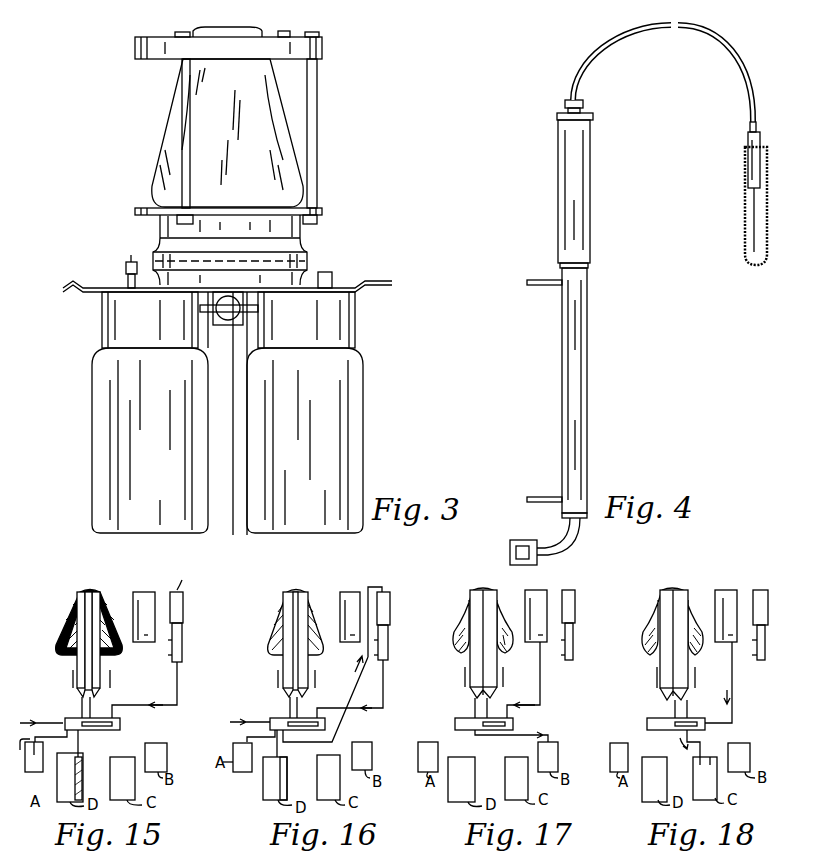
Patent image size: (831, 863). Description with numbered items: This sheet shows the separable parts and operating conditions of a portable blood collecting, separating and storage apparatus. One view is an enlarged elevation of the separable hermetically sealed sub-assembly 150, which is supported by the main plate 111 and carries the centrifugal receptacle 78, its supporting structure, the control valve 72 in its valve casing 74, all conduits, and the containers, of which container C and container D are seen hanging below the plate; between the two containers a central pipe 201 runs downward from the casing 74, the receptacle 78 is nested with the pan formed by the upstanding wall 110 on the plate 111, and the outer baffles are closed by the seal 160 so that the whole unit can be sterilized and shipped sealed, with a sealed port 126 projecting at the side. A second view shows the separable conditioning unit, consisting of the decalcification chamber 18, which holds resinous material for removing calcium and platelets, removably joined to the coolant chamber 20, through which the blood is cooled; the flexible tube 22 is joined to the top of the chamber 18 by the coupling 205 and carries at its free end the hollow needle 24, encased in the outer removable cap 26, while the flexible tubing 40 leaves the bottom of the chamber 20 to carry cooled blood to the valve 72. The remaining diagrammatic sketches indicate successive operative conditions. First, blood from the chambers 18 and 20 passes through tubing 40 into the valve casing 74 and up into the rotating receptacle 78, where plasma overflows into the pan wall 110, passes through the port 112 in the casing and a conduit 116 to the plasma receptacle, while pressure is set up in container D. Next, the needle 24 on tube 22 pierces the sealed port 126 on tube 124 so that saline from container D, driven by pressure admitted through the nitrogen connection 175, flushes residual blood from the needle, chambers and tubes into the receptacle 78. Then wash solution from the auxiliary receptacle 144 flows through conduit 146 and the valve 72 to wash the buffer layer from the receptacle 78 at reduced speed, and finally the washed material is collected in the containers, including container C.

In FIG. 4, the decalcification chamber 18 is at (598, 176).
In FIG. 15, the decalcification chamber 18 is at (184, 608).
In FIG. 16, the decalcification chamber 18 is at (393, 605).
In FIG. 4, the coolant chamber 20 is at (595, 375).
In FIG. 15, the coolant chamber 20 is at (183, 642).
In FIG. 16, the coolant chamber 20 is at (388, 642).
In FIG. 4, the flexible tube 22 is at (712, 33).
In FIG. 15, the flexible tube 22 is at (188, 576).
In FIG. 16, the flexible tube 22 is at (347, 698).
In FIG. 4, the hollow needle 24 is at (760, 228).
In FIG. 4, the outer removable cap 26 is at (766, 205).
In FIG. 4, the flexible tubing 40 is at (573, 540).
In FIG. 15, the flexible tubing 40 is at (118, 705).
In FIG. 16, the flexible tubing 40 is at (388, 712).
In FIG. 17, the control valve 72 is at (465, 720).
In FIG. 3, the valve casing 74 is at (236, 325).
In FIG. 15, the valve casing 74 is at (122, 723).
In FIG. 3, the centrifugal receptacle 78 is at (272, 102).
In FIG. 15, the centrifugal receptacle 78 is at (70, 626).
In FIG. 16, the centrifugal receptacle 78 is at (296, 623).
In FIG. 17, the centrifugal receptacle 78 is at (483, 620).
In FIG. 18, the centrifugal receptacle 78 is at (672, 621).
In FIG. 15, the upstanding wall 110 is at (72, 673).
In FIG. 3, the main plate 111 is at (355, 284).
In FIG. 15, the port 112 is at (82, 700).
In FIG. 15, the conduit 116 is at (28, 777).
In FIG. 16, the tube 124 is at (277, 783).
In FIG. 3, the sealed port 126 is at (131, 256).
In FIG. 15, the sealed port 126 is at (83, 757).
In FIG. 16, the sealed port 126 is at (283, 757).
In FIG. 17, the auxiliary receptacle 144 is at (538, 593).
In FIG. 18, the auxiliary receptacle 144 is at (725, 593).
In FIG. 17, the conduit 146 is at (541, 684).
In FIG. 18, the conduit 146 is at (733, 712).
In FIG. 3, the removable sub-assembly 150 is at (319, 249).
In FIG. 3, the seal 160 is at (308, 259).
In FIG. 16, the nitrogen connection 175 is at (275, 720).
In FIG. 3, the center pipe 201 is at (234, 533).
In FIG. 4, the coupling 205 is at (568, 98).
In FIG. 3, the container C is at (340, 432).
In FIG. 3, the container D is at (105, 457).